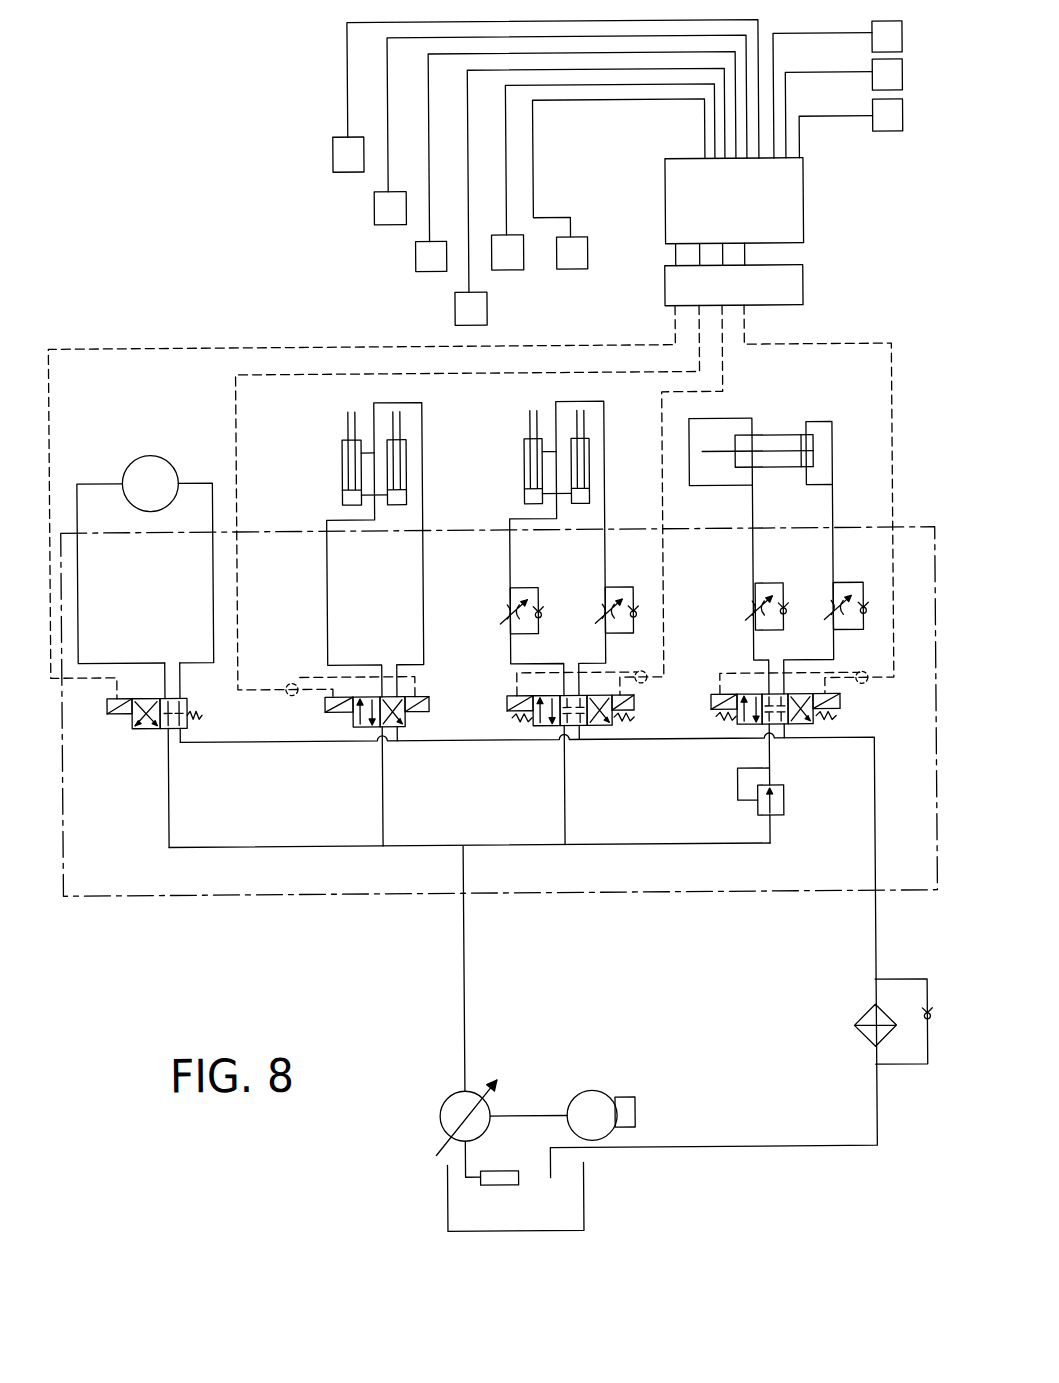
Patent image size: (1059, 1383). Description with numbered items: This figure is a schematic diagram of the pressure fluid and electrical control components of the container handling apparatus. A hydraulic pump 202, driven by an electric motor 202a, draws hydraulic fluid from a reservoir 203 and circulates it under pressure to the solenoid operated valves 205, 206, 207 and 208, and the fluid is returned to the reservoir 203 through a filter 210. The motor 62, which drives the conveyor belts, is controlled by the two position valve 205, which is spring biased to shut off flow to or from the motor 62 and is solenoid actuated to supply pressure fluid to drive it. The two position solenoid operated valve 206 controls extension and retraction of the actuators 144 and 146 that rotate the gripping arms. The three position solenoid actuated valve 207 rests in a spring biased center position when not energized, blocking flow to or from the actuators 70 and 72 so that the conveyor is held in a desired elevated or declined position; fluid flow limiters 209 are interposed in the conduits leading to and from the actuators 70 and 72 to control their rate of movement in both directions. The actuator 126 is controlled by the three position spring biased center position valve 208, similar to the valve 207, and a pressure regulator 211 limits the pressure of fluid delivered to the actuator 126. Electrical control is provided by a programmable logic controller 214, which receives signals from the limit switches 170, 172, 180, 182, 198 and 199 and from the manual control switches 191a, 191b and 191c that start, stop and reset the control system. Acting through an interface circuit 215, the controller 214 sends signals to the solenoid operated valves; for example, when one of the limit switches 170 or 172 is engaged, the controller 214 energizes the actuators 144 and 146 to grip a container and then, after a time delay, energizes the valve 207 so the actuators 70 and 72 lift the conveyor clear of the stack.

The limit switch 170 is at (337, 155).
The limit switch 172 is at (378, 208).
The limit switch 180 is at (419, 256).
The limit switch 182 is at (458, 306).
The limit switch 198 is at (511, 270).
The limit switch 199 is at (575, 270).
The manual control switch 191a is at (877, 32).
The manual control switch 191b is at (877, 72).
The manual control switch 191c is at (880, 134).
The programmable logic controller 214 is at (807, 201).
The interface circuit 215 is at (807, 276).
The motor 62 is at (151, 453).
The actuator 144 is at (344, 450).
The actuator 146 is at (408, 486).
The actuator 70 is at (526, 450).
The actuator 72 is at (592, 448).
The actuator 126 is at (776, 437).
The fluid flow limiter 209 is at (836, 597).
The two position valve 205 is at (147, 728).
The two position solenoid operated valve 206 is at (366, 734).
The three position solenoid actuated valve 207 is at (548, 734).
The three position solenoid actuated valve 208 is at (752, 734).
The pressure regulator 211 is at (783, 802).
The filter 210 is at (855, 1016).
The hydraulic pump 202 is at (445, 1100).
The electric motor 202a is at (600, 1092).
The reservoir 203 is at (444, 1206).